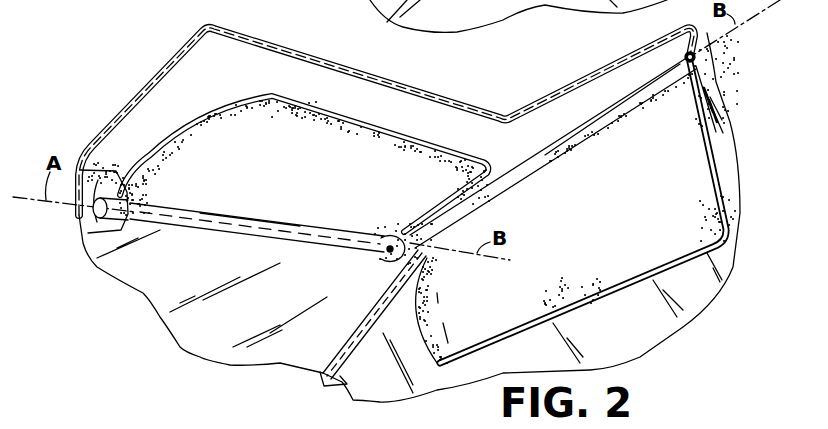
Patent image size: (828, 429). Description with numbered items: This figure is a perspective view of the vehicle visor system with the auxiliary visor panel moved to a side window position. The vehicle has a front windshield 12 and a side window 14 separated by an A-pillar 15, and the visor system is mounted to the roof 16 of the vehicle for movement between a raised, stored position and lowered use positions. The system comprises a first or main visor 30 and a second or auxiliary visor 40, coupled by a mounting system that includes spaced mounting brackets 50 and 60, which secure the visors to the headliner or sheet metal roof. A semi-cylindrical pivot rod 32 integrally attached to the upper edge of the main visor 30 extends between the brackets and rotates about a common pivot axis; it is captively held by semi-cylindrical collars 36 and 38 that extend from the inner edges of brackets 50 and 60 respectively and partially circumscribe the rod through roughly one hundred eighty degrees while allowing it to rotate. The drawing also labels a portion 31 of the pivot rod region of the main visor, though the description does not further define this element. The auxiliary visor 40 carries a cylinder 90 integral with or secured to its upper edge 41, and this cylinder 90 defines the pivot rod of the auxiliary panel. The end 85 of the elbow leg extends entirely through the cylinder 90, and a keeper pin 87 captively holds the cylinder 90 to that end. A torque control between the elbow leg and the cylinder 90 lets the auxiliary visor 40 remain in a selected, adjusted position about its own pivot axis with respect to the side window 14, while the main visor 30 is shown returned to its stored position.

The front windshield 12 is at (315, 341).
The side window 14 is at (545, 358).
The A-pillar 15 is at (346, 360).
The roof 16 is at (409, 100).
The main visor 30 is at (183, 129).
The connecting rod 31 is at (293, 213).
The semi-cylindrical pivot rod 32 is at (255, 233).
The semi-cylindrical collar 36 is at (130, 226).
The semi-cylindrical collar 38 is at (380, 234).
The auxiliary visor 40 is at (581, 297).
The upper edge 41 is at (614, 116).
The mounting bracket 50 is at (78, 220).
The mounting bracket 60 is at (383, 262).
The end of elbow 85 is at (703, 58).
The keeper pin 87 is at (703, 66).
The cylinder 90 is at (523, 168).